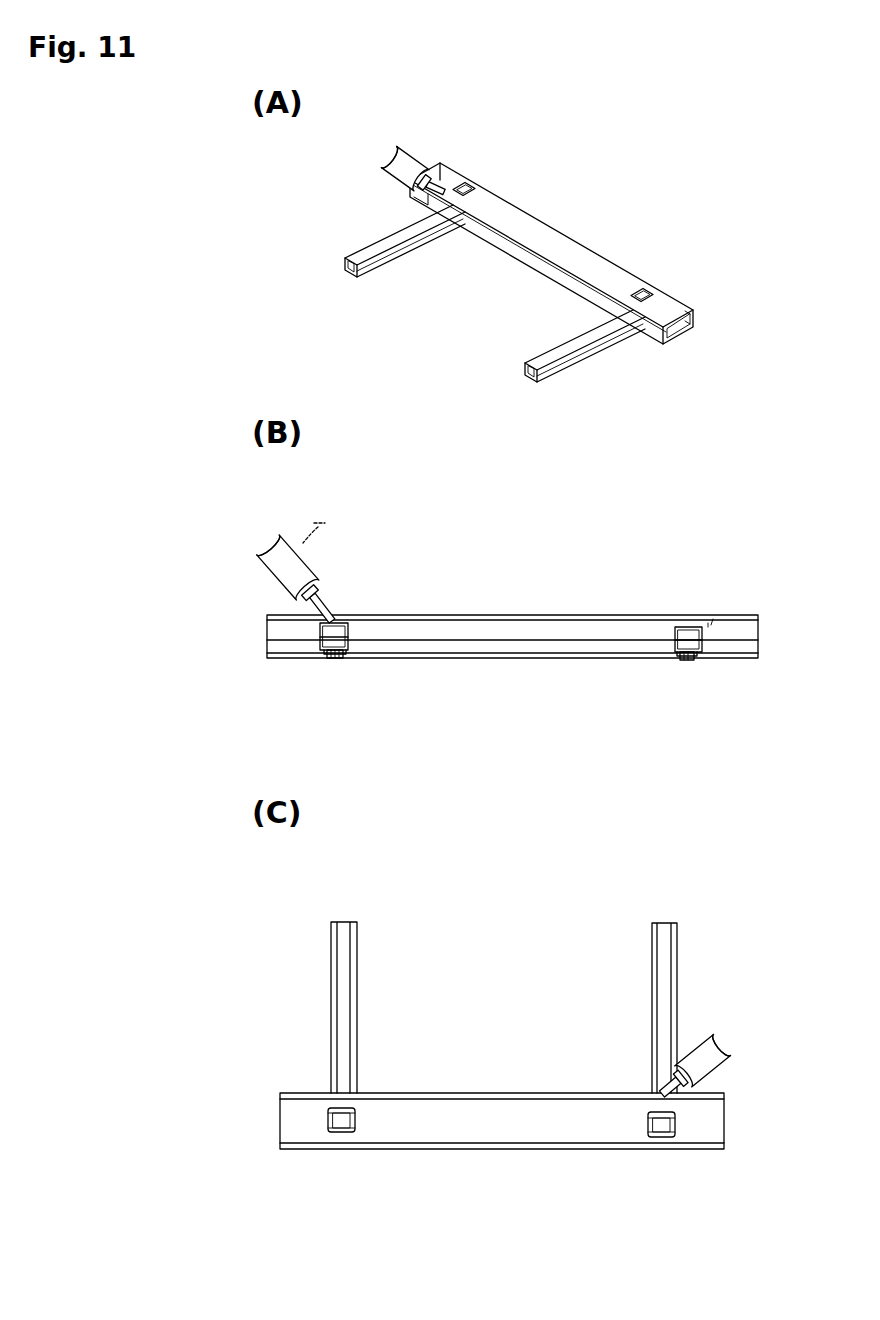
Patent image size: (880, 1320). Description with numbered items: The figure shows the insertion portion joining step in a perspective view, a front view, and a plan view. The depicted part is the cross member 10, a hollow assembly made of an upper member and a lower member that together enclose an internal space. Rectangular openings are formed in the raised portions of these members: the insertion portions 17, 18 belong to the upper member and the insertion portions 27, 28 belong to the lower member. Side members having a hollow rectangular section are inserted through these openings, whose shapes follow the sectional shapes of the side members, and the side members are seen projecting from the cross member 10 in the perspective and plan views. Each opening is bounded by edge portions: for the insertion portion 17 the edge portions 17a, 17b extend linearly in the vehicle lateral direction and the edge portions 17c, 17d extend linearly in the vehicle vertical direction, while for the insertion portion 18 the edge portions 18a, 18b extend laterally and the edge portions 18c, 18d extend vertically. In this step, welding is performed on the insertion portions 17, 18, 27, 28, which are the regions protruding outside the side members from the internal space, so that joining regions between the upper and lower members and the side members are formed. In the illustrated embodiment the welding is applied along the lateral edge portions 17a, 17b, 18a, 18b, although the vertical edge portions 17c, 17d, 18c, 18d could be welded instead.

In FIG. 11B, the cross member 10 is at (500, 614).
In FIG. 11C, the insertion portion 17 is at (651, 1088).
In FIG. 11C, the insertion portion 18 is at (353, 1087).
In FIG. 11C, the insertion portion 27 is at (649, 1008).
In FIG. 11C, the insertion portion 28 is at (368, 1007).
In FIG. 11B, the edge portion 17a is at (339, 622).
In FIG. 11B, the edge portion 17b is at (347, 657).
In FIG. 11B, the edge portion 17c is at (352, 632).
In FIG. 11B, the edge portion 17d is at (317, 650).
In FIG. 11B, the edge portion 18a is at (680, 627).
In FIG. 11B, the edge portion 18b is at (700, 665).
In FIG. 11B, the edge portion 18c is at (707, 632).
In FIG. 11B, the edge portion 18d is at (672, 652).